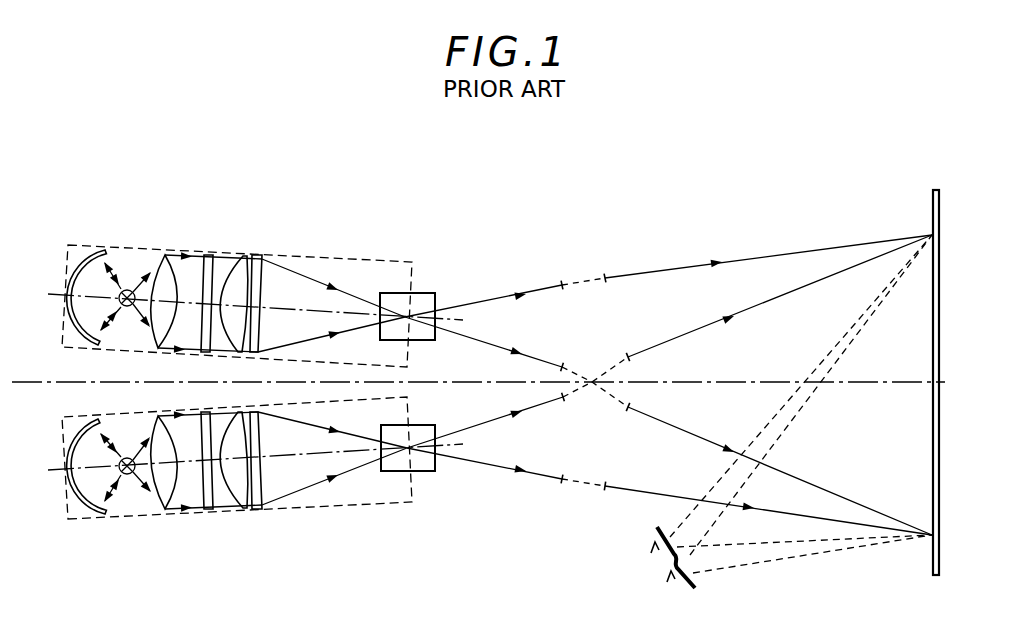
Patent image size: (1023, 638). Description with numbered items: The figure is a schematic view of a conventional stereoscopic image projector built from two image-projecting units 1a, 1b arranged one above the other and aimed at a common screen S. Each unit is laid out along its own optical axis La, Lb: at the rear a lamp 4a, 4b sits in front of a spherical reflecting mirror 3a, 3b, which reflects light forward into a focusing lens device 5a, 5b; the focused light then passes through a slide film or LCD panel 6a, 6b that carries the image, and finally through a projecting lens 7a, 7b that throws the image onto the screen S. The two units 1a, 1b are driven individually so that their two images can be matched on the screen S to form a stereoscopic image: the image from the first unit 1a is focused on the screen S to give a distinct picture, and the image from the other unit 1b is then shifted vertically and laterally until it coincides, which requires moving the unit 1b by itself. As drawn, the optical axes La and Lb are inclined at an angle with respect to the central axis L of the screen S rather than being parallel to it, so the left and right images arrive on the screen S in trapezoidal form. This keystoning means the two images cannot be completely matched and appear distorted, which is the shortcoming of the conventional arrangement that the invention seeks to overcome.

The image-projecting unit 1a is at (390, 262).
The image-projecting unit 1b is at (373, 505).
The spherical reflecting mirror 3a is at (85, 262).
The spherical reflecting mirror 3b is at (82, 505).
The lamp 4a is at (121, 289).
The lamp 4b is at (128, 480).
The focusing lens device 5a is at (243, 244).
The focusing lens device 5b is at (245, 522).
The slide film or LCD panel 6a is at (260, 287).
The slide film or LCD panel 6b is at (267, 493).
The projecting lens 7a is at (433, 293).
The projecting lens 7b is at (428, 472).
The optical axis La is at (271, 314).
The optical axis Lb is at (272, 452).
The screen S is at (940, 287).
The central axis L is at (490, 382).